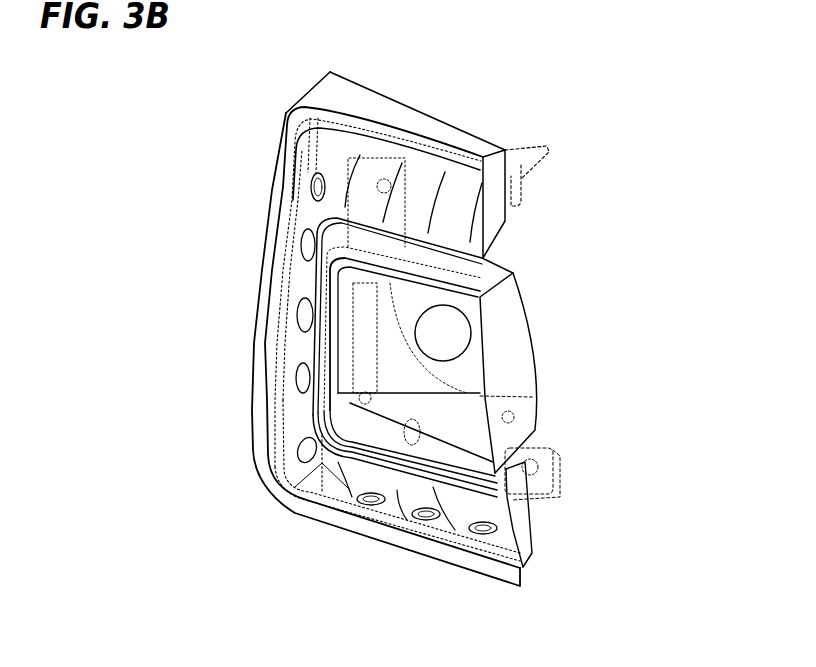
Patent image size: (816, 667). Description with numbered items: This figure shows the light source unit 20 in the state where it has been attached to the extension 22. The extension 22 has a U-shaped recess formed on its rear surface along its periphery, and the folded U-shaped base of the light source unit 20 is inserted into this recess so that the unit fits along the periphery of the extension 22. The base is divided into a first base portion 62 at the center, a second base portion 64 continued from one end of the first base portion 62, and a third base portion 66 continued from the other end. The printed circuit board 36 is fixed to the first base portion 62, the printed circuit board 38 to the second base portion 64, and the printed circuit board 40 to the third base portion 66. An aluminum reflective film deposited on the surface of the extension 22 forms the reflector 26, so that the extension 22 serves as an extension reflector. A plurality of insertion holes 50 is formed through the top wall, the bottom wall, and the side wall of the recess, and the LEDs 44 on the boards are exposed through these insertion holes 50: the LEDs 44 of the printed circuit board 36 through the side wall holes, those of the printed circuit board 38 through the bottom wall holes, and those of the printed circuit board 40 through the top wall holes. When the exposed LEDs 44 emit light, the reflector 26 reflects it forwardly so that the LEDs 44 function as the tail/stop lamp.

The light source unit 20 is at (497, 114).
The extension 22 is at (303, 92).
The reflector 26 is at (307, 157).
The printed circuit board 36 is at (292, 348).
The printed circuit board 38 is at (475, 548).
The printed circuit board 40 is at (473, 175).
The LEDs 44 is at (307, 208).
The insertion holes 50 is at (310, 193).
The first base portion 62 is at (266, 318).
The second base portion 64 is at (560, 496).
The third base portion 66 is at (527, 143).